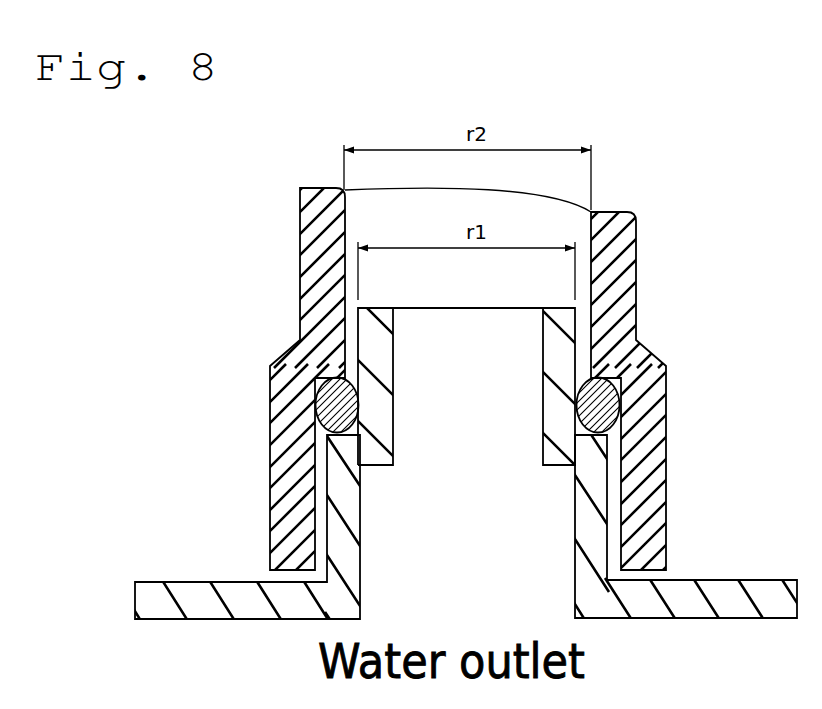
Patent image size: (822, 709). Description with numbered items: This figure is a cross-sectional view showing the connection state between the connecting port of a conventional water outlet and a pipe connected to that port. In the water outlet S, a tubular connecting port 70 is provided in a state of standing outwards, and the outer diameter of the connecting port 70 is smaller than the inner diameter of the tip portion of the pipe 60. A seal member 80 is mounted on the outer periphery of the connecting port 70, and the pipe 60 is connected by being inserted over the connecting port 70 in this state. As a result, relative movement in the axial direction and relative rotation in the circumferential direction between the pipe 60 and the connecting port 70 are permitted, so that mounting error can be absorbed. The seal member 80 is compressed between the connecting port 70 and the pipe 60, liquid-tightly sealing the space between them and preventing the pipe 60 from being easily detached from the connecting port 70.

The pipe 60 is at (300, 255).
The connecting port 70 is at (425, 346).
The seal member 80 is at (578, 404).
The water outlet body S is at (322, 517).